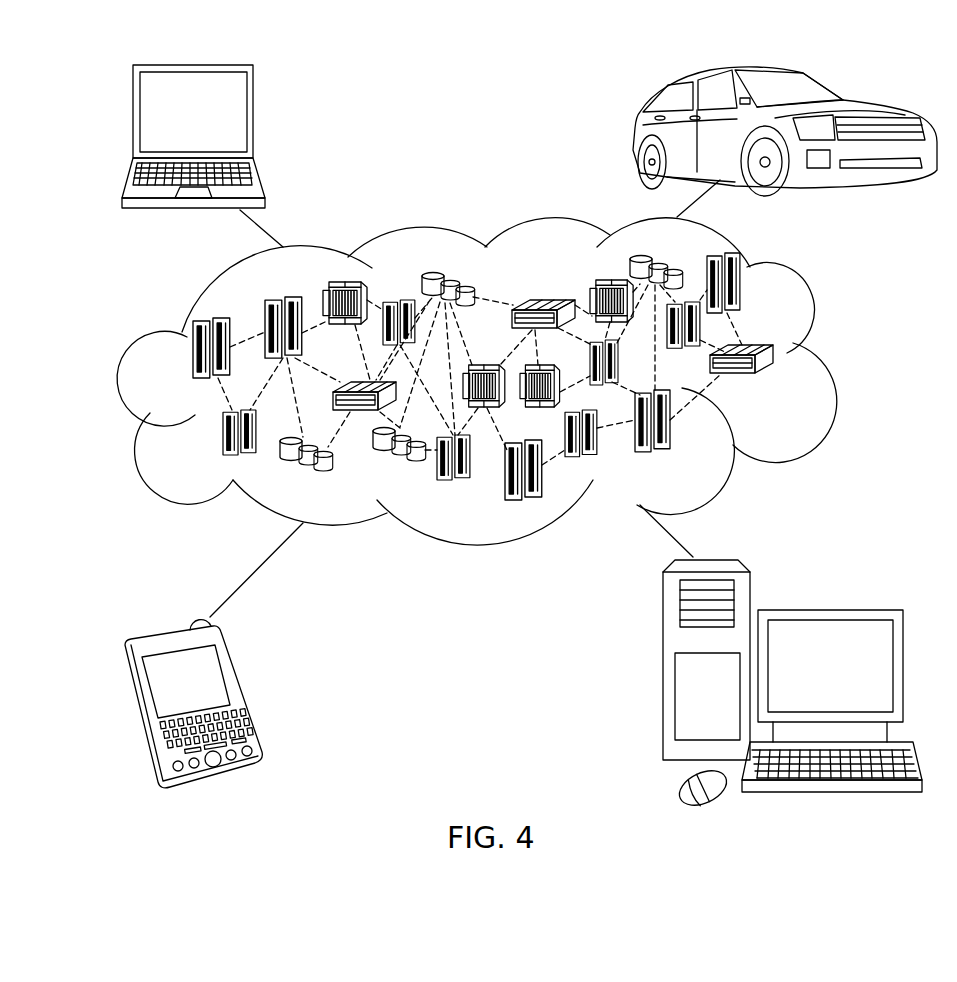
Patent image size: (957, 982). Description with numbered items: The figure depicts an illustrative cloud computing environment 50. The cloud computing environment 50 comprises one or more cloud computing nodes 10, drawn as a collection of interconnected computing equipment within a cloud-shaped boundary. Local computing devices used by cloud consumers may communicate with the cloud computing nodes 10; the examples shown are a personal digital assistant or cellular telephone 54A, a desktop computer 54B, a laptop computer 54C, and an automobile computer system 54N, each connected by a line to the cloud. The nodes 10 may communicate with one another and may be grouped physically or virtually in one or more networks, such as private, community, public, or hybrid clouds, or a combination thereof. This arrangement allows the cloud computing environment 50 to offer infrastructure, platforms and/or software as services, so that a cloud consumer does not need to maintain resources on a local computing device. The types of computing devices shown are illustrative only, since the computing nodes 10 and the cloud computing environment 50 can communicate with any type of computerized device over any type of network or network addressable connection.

The cloud computing environment 50 is at (833, 352).
The cloud computing nodes 10 is at (778, 385).
The personal digital assistant or cellular telephone 54A is at (243, 692).
The desktop computer 54B is at (830, 608).
The laptop computer 54C is at (254, 118).
The automobile computer system 54N is at (635, 131).